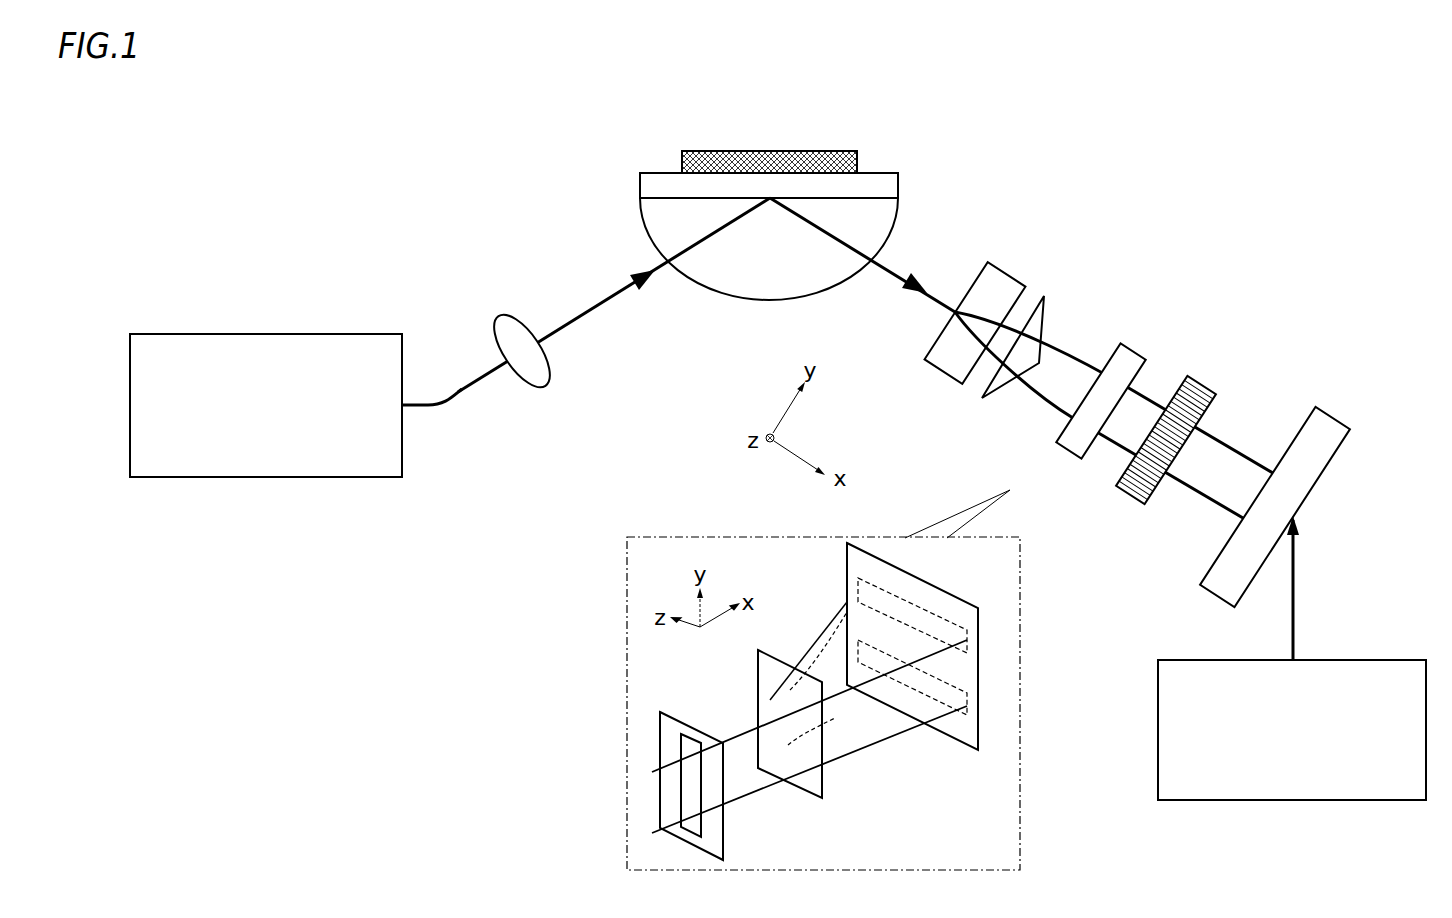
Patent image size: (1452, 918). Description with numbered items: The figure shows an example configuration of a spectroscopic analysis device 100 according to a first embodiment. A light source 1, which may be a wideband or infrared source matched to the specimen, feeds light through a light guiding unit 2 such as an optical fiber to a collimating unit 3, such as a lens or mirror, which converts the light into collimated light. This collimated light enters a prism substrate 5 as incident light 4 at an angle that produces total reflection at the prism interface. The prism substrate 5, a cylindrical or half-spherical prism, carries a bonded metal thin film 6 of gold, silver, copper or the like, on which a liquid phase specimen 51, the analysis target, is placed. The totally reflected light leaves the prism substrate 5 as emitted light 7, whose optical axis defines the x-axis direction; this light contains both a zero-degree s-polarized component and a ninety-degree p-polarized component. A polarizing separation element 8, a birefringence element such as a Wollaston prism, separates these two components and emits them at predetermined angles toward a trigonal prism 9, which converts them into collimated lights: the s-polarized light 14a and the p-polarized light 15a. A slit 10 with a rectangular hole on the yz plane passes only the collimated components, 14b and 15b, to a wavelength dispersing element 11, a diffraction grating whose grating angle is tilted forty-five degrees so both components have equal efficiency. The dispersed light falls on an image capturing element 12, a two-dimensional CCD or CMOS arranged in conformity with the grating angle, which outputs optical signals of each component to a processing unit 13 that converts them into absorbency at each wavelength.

The spectroscopic analysis device 100 is at (1186, 162).
The light source 1 is at (293, 333).
The light guiding unit 2 is at (463, 392).
The collimating unit 3 is at (503, 313).
The incident light 4 is at (605, 302).
The prism substrate 5 is at (776, 301).
The metal thin film 6 is at (893, 173).
The liquid phase specimen 51 is at (820, 152).
The emitted light 7 is at (905, 268).
The polarizing separation element 8 is at (1013, 262).
The trigonal prism 9 is at (1045, 315).
The slit 10 is at (1140, 347).
The wavelength dispersing element 11 is at (1210, 390).
The image capturing element 12 is at (1338, 420).
The processing unit 13 is at (1375, 660).
The emitted light of the 0° polarized light component 14a is at (1043, 398).
The 0° polarized light component after the slit 14b is at (1205, 505).
The emitted light of the 90° polarized light component 15a is at (1083, 353).
The 90° polarized light component after the slit 15b is at (1243, 443).